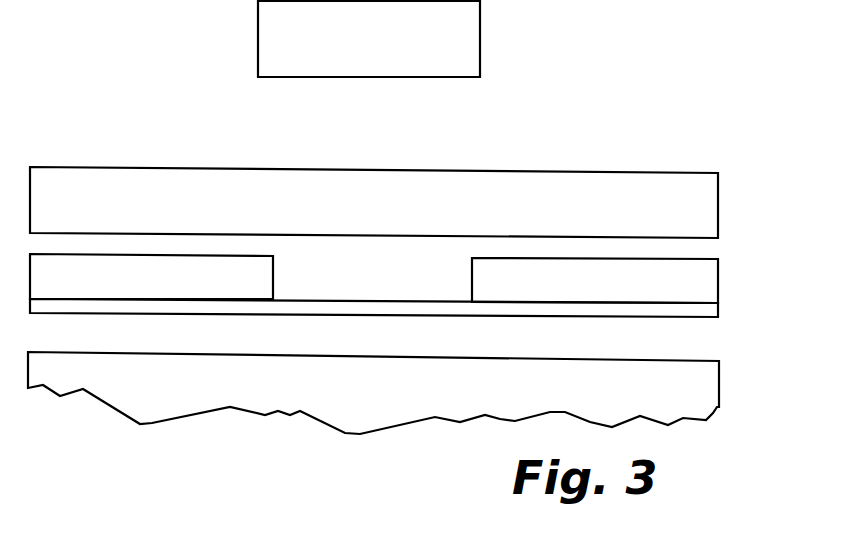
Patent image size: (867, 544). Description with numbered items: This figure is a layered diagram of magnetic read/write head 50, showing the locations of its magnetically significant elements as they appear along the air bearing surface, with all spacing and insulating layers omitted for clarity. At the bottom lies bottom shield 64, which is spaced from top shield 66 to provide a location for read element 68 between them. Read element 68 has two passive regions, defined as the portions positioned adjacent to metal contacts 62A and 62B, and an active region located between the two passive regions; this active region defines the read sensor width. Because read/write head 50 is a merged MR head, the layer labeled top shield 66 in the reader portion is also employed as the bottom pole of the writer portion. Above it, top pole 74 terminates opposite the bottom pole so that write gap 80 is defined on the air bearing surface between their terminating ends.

The magnetic read/write head 50 is at (645, 108).
The metal contact 62A is at (218, 290).
The metal contact 62B is at (610, 294).
The bottom shield 64 is at (388, 400).
The top shield 66 is at (386, 212).
The read element 68 is at (705, 312).
The top pole 74 is at (384, 42).
The write gap 80 is at (510, 79).